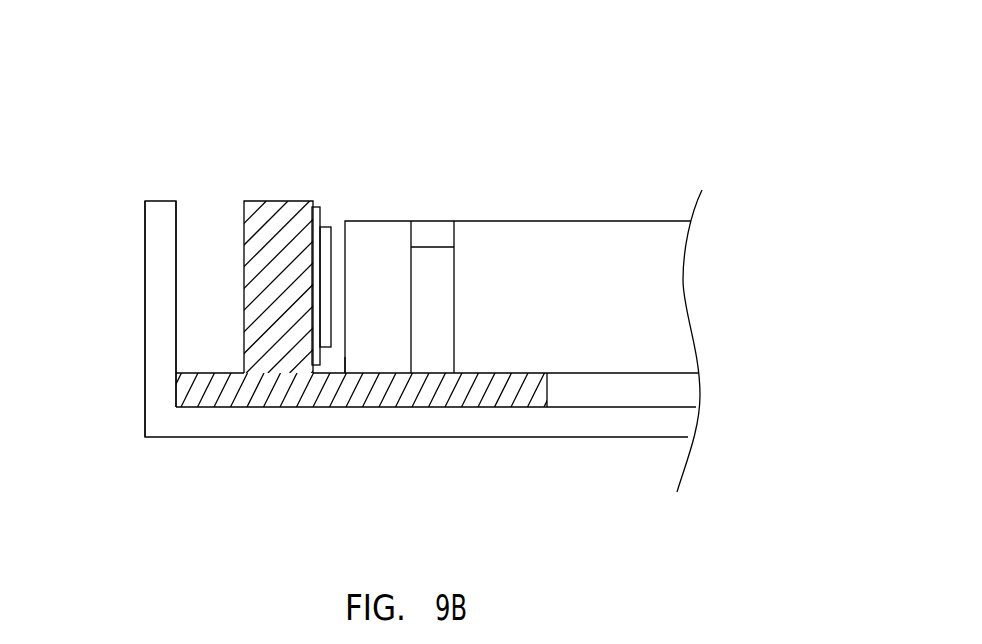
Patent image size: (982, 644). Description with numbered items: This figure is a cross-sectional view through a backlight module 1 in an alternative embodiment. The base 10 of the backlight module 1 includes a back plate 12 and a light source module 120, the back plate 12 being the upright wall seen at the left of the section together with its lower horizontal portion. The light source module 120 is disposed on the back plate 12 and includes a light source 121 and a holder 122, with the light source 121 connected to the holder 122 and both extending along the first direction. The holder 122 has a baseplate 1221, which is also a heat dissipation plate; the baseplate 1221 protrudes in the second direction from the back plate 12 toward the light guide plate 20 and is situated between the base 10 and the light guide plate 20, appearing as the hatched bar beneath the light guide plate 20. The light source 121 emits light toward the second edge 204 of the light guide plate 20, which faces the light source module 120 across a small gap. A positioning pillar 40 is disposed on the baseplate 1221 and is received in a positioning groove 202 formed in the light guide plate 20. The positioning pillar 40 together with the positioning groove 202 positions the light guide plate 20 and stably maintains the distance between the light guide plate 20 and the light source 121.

The backlight module 1 is at (179, 81).
The base 10 is at (140, 183).
The back plate 12 is at (160, 292).
The light source module 120 is at (360, 137).
The light source 121 is at (330, 207).
The holder 122 is at (263, 203).
The baseplate 1221 is at (365, 393).
The light guide plate 20 is at (550, 243).
The positioning groove 202 is at (422, 235).
The second edge 204 is at (345, 357).
The positioning pillar 40 is at (437, 248).